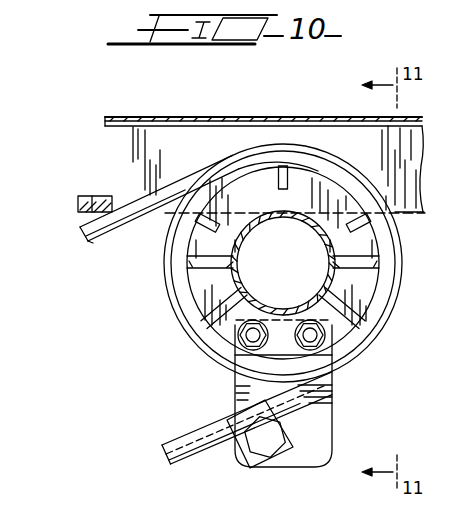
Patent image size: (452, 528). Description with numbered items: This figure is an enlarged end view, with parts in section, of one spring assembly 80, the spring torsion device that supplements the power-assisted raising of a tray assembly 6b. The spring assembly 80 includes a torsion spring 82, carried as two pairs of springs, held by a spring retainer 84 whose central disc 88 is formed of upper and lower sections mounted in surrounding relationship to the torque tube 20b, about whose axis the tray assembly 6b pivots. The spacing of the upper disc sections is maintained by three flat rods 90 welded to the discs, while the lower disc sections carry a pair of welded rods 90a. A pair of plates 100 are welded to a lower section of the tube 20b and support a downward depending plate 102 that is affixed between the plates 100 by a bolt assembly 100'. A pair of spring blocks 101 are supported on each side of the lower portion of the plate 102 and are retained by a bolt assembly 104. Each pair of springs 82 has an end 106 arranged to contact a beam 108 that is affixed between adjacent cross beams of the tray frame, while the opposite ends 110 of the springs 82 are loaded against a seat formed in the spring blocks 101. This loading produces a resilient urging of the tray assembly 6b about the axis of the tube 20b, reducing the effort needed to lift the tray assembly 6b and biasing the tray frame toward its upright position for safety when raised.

The tray assembly 6b is at (214, 117).
The beam 108 is at (92, 196).
The torsion spring 82 is at (355, 199).
The spring retainer 84 is at (321, 194).
The central disc 88 is at (349, 304).
The spring assembly 80 is at (215, 160).
The end of springs 106 is at (106, 242).
The torque tube 20b is at (268, 213).
The flat rod 90 is at (286, 169).
The welded rod 90a is at (209, 321).
The bolt assembly 100' is at (281, 301).
The plate 100 is at (310, 396).
The downward depending plate 102 is at (333, 406).
The opposite end of springs 110 is at (232, 415).
The spring block 101 is at (233, 433).
The bolt assembly 104 is at (262, 442).